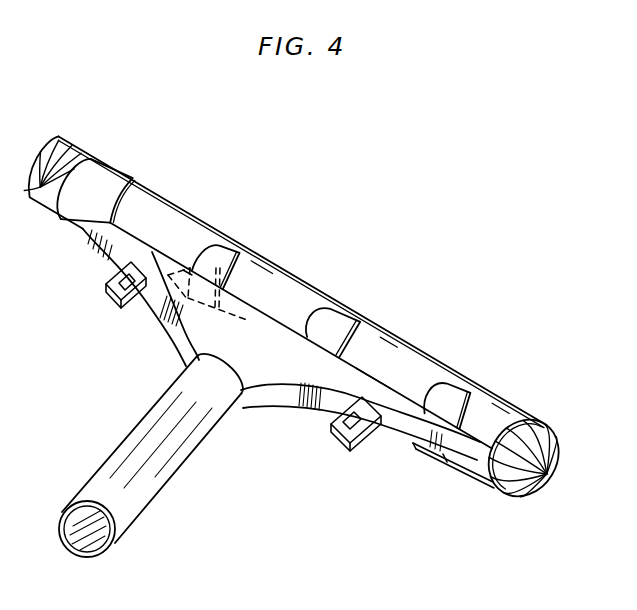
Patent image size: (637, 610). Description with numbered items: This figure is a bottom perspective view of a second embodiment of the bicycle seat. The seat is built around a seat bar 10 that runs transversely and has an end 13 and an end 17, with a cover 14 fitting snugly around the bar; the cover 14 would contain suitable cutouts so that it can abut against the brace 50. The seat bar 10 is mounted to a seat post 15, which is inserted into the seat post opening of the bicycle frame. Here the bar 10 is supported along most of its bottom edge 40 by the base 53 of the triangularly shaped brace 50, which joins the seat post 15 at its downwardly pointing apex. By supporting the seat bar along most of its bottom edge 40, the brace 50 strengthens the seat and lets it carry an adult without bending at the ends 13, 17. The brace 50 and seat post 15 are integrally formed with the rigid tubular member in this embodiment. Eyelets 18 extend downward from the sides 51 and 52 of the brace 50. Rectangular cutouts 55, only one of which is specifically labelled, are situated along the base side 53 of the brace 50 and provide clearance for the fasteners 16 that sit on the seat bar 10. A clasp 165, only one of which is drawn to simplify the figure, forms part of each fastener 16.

The seat bar 10 is at (290, 262).
The end 13 is at (76, 145).
The cover 14 is at (513, 407).
The seat post 15 is at (150, 505).
The fasteners 16 is at (128, 186).
The end 17 is at (554, 468).
The eyelets 18 is at (118, 303).
The bottom edge 40 is at (385, 375).
The brace 50 is at (180, 328).
The side 51 is at (178, 338).
The side 52 is at (275, 398).
The base 53 is at (218, 306).
The rectangular cutouts 55 is at (418, 448).
The clasp 165 is at (180, 268).